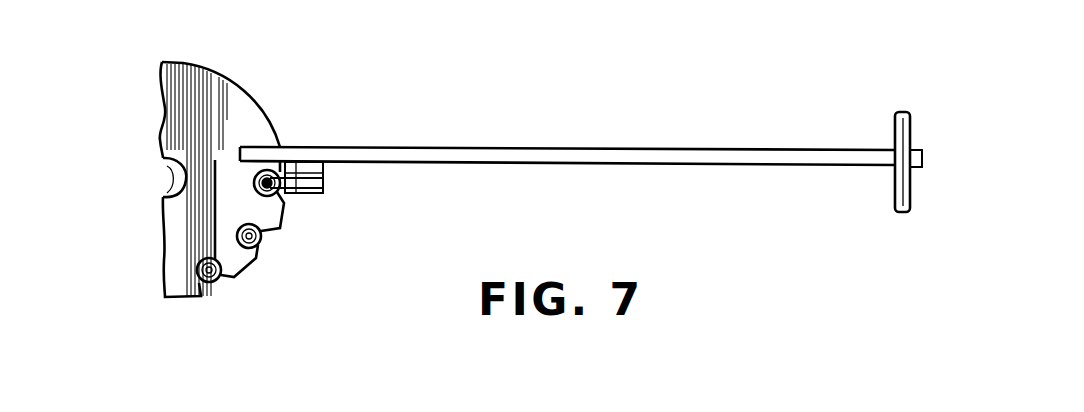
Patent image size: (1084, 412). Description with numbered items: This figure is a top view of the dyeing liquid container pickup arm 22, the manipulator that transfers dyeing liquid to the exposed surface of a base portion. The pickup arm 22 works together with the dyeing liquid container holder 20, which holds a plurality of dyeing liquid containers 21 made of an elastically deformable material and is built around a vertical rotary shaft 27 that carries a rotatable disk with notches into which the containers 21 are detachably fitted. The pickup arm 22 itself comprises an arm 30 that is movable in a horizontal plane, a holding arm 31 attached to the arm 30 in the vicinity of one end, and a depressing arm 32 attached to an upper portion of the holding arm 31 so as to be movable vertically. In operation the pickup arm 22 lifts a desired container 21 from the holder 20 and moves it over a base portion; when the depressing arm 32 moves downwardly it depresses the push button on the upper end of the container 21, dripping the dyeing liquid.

The dyeing liquid container holder 20 is at (183, 298).
The dyeing liquid container 21 is at (217, 280).
The dyeing liquid container pickup arm 22 is at (637, 148).
The vertical rotary shaft 27 is at (160, 188).
The arm 30 is at (753, 166).
The holding arm 31 is at (325, 190).
The depressing arm 32 is at (302, 194).